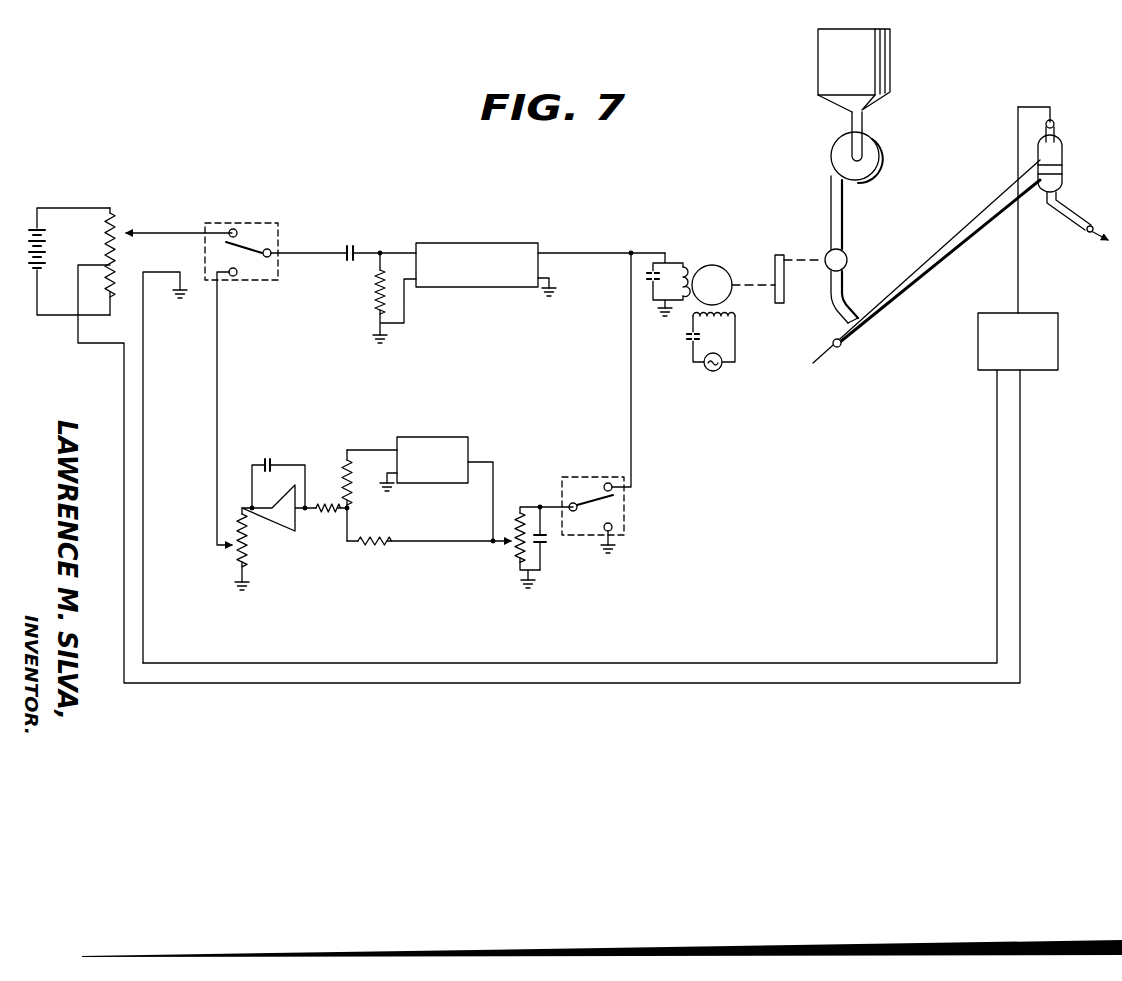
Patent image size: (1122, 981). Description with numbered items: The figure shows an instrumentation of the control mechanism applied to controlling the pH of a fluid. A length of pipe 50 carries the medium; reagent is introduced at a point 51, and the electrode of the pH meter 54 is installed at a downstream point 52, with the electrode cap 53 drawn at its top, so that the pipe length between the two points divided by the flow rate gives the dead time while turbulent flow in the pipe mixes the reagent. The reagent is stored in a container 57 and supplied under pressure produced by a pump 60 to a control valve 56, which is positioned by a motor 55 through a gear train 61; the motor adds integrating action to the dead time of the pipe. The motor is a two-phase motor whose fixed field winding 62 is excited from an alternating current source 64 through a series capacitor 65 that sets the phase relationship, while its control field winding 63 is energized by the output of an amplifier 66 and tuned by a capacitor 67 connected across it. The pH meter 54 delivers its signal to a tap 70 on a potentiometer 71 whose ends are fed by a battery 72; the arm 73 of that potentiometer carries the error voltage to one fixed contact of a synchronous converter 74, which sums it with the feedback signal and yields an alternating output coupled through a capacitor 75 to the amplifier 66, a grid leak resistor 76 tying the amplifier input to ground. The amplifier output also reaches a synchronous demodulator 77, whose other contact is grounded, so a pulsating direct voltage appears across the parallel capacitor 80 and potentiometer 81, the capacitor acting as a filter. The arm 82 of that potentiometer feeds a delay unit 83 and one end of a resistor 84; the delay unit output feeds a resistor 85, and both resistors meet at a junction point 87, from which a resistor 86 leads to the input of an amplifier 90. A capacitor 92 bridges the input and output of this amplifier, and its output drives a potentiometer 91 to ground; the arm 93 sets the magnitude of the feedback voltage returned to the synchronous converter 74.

The pipe 50 is at (916, 278).
The point 51 is at (846, 324).
The point 52 is at (1063, 166).
The electrode cap 53 is at (1056, 131).
The pH meter 54 is at (1060, 334).
The motor 55 is at (722, 267).
The control valve 56 is at (847, 256).
The container 57 is at (822, 66).
The pump 60 is at (880, 146).
The gear train 61 is at (776, 256).
The fixed field winding 62 is at (714, 320).
The control field winding 63 is at (682, 264).
The alternating current source 64 is at (718, 371).
The capacitor 65 is at (689, 341).
The amplifier 66 is at (536, 245).
The capacitor 67 is at (656, 284).
The tap 70 is at (110, 258).
The potentiometer 71 is at (117, 262).
The battery 72 is at (30, 239).
The arm 73 is at (126, 230).
The synchronous converter 74 is at (265, 223).
The capacitor 75 is at (359, 242).
The grid leak resistor 76 is at (375, 296).
The synchronous demodulator 77 is at (590, 477).
The capacitor 80 is at (546, 540).
The potentiometer 81 is at (514, 515).
The arm 82 is at (508, 545).
The delay unit 83 is at (451, 437).
The resistor 84 is at (372, 544).
The resistor 85 is at (344, 468).
The resistor 86 is at (326, 513).
The junction point 87 is at (349, 509).
The amplifier 90 is at (282, 532).
The potentiometer 91 is at (246, 562).
The capacitor 92 is at (270, 458).
The arm 93 is at (230, 548).